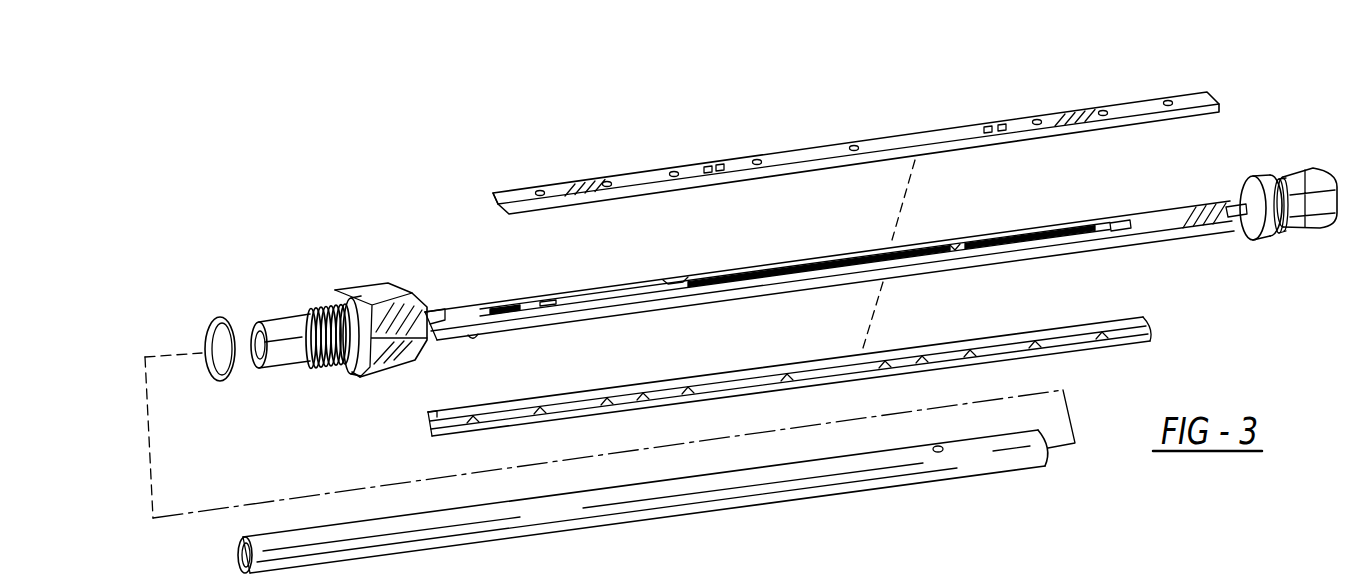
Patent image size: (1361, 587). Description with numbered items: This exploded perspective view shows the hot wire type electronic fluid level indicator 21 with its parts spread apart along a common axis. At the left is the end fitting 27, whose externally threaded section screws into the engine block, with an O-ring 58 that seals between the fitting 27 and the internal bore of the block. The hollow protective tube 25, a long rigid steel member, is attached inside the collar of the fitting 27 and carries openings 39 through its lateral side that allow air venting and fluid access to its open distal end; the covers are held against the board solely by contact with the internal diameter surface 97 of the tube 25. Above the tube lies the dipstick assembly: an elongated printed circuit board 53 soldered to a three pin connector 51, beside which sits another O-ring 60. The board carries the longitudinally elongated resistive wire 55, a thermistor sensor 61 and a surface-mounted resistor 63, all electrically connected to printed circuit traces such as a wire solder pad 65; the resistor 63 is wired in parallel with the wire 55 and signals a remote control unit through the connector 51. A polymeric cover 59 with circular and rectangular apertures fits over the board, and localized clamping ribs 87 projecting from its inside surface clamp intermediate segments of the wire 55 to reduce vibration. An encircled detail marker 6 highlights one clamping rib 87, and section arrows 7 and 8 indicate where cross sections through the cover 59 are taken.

The electronic fluid level indicator 21 is at (382, 191).
The hollow protective tube 25 is at (755, 485).
The end fitting 27 is at (365, 288).
The openings 39 is at (938, 452).
The three pin connector 51 is at (1320, 222).
The printed circuit board 53 is at (540, 296).
The resistive wire 55 is at (955, 245).
The O-ring 58 is at (219, 318).
The polymeric covers 59 is at (875, 147).
The O-ring 60 is at (1280, 233).
The thermistor sensor 61 is at (445, 318).
The resistor 63 is at (1240, 217).
The wire solder pad 65 is at (1118, 222).
The clamping rib 87 is at (655, 395).
The internal diameter surface 97 is at (241, 557).
The detail view indicator 6 is at (694, 375).
The section line 7- 7 is at (741, 121).
The section line 8- 8 is at (778, 113).